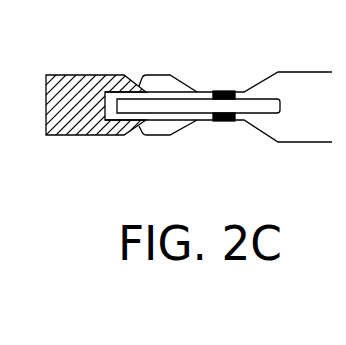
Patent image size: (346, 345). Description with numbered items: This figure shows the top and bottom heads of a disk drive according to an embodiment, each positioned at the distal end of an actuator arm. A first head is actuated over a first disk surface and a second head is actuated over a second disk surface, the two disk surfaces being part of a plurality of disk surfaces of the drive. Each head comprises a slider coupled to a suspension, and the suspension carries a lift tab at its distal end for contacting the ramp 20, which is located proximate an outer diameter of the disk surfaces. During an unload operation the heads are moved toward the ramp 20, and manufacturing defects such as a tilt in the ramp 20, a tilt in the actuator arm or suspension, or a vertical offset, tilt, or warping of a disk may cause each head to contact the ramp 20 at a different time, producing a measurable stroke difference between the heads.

The ramp 20 is at (83, 76).